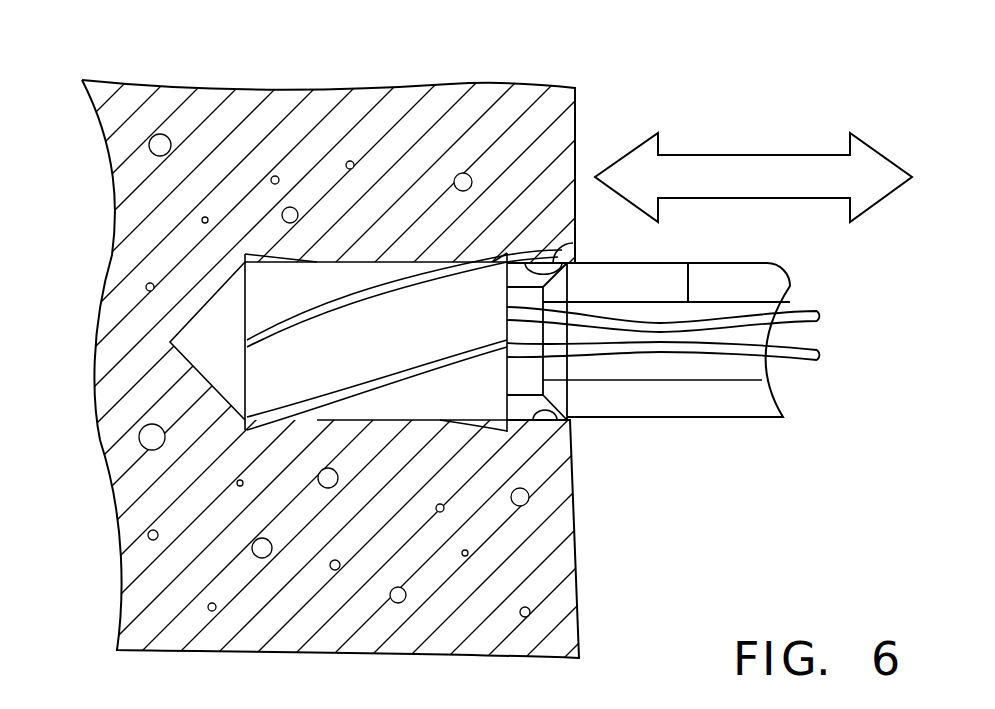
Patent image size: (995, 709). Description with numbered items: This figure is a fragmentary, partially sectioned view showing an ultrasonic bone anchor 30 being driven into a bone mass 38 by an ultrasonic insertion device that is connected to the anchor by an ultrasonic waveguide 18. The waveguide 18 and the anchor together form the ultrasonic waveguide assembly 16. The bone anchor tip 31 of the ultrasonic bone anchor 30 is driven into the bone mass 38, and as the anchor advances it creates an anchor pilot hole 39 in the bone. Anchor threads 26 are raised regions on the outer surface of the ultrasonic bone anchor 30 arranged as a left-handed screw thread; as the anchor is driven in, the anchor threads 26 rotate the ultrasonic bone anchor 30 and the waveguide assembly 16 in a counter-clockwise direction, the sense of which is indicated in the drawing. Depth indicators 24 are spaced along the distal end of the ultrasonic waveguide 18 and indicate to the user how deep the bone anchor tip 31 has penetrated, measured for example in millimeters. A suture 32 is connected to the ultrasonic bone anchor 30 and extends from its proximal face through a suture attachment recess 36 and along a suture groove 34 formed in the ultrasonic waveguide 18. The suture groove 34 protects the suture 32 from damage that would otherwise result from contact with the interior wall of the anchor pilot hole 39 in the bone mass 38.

The ultrasonic waveguide assembly 16 is at (689, 399).
The ultrasonic waveguide 18 is at (678, 420).
The depth indicators 24 is at (697, 262).
The anchor threads 26 is at (383, 290).
The ultrasonic bone anchor 30 is at (386, 358).
The bone anchor tip 31 is at (228, 351).
The suture 32 is at (820, 309).
The suture groove 34 is at (747, 368).
The suture attachment recess 36 is at (533, 367).
The bone mass 38 is at (497, 84).
The anchor pilot hole 39 is at (562, 251).